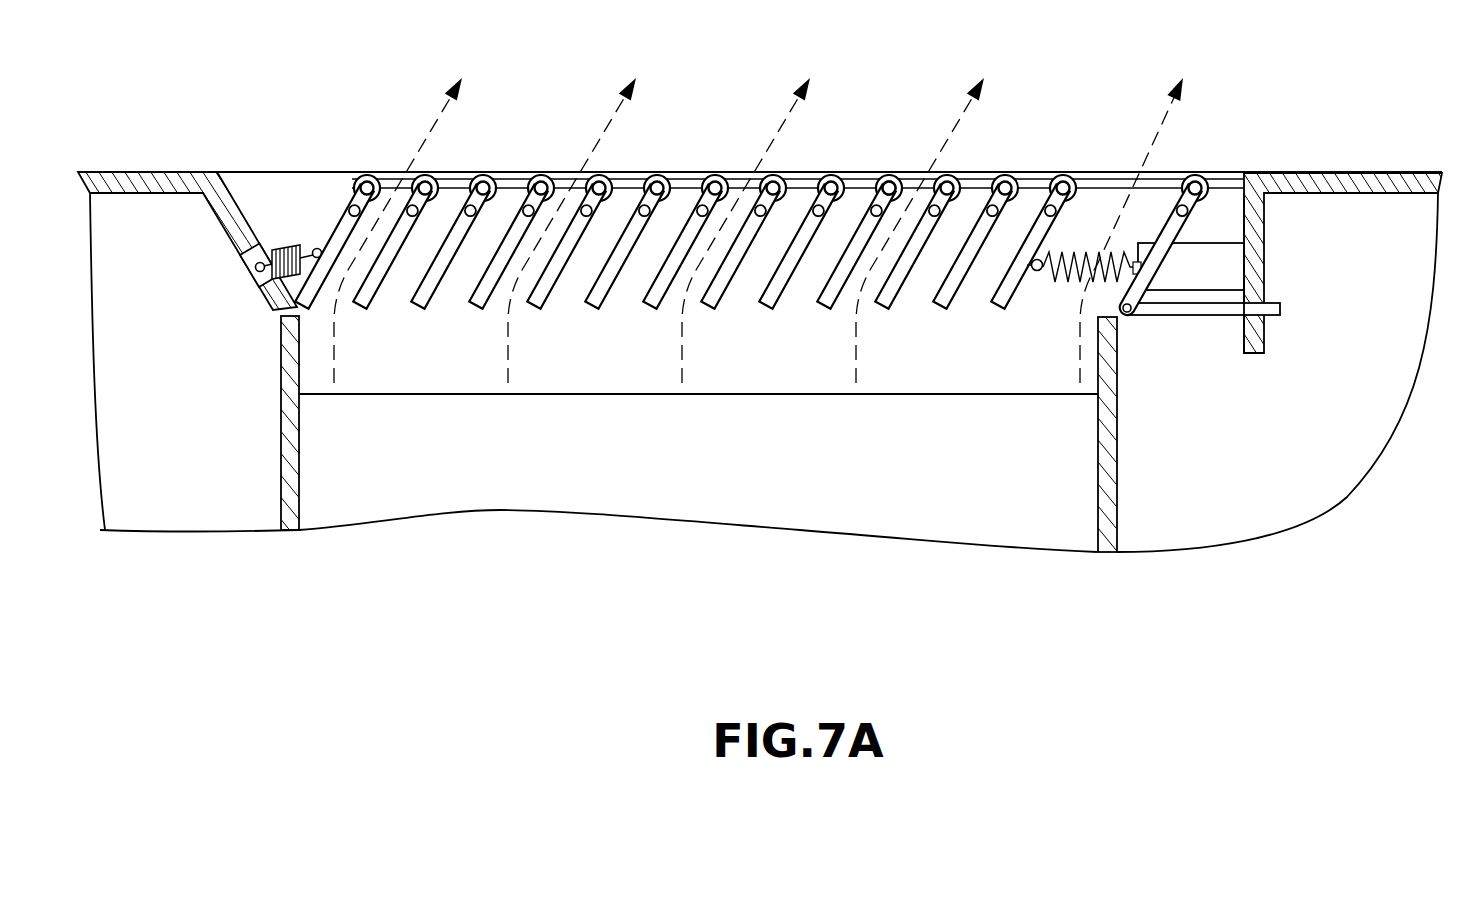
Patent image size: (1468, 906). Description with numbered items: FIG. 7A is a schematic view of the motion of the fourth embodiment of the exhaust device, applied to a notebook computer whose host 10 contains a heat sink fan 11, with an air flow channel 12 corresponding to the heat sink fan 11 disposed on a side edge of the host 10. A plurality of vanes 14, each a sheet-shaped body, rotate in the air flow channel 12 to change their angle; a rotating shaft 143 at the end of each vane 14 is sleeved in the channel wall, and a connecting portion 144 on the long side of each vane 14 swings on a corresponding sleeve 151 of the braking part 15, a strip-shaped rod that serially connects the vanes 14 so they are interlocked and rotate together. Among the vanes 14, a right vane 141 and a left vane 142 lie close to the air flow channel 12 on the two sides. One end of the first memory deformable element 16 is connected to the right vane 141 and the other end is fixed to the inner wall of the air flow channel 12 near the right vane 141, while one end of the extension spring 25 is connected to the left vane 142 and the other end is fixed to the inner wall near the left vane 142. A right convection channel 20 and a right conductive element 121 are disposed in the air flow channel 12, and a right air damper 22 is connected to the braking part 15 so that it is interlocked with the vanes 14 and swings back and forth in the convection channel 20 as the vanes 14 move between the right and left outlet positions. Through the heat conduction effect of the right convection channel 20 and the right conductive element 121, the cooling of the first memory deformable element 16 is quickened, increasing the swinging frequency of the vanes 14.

The host 10 is at (1348, 173).
The heat sink fan 11 is at (413, 492).
The air flow channel 12 is at (266, 201).
The vane 14 is at (513, 209).
The braking part 15 is at (988, 168).
The first memory deformable element 16 is at (1115, 258).
The right convection channel 20 is at (1223, 197).
The right air damper 22 is at (1203, 322).
The extension spring 25 is at (289, 243).
The right conductive element 121 is at (1213, 268).
The right vane 141 is at (1048, 234).
The left vane 142 is at (332, 223).
The rotating shaft 143 is at (688, 198).
The connecting portion 144 is at (870, 186).
The sleeve 151 is at (889, 193).